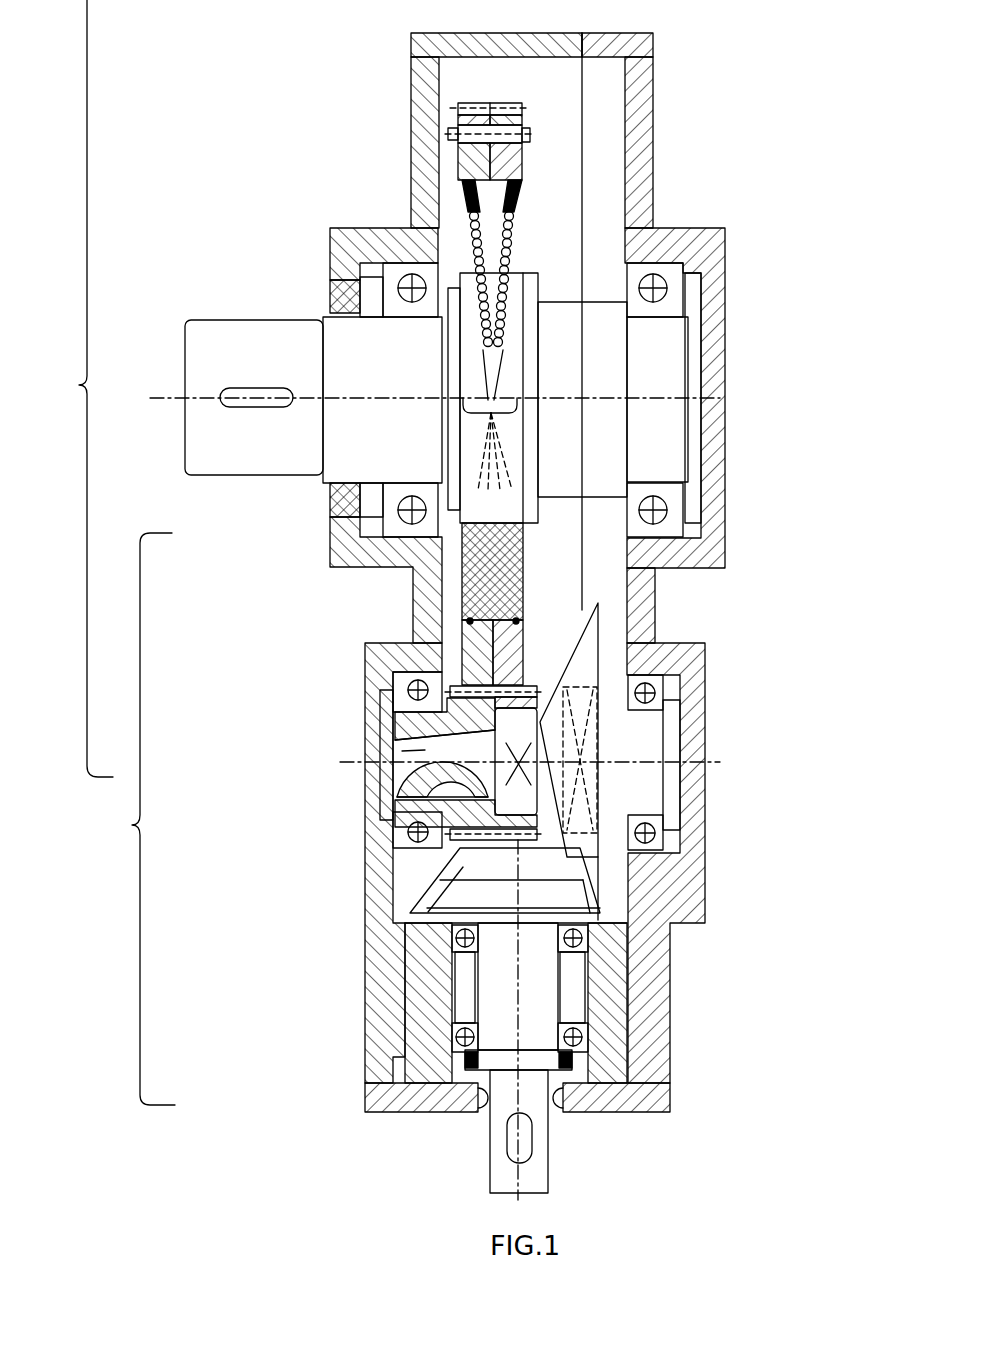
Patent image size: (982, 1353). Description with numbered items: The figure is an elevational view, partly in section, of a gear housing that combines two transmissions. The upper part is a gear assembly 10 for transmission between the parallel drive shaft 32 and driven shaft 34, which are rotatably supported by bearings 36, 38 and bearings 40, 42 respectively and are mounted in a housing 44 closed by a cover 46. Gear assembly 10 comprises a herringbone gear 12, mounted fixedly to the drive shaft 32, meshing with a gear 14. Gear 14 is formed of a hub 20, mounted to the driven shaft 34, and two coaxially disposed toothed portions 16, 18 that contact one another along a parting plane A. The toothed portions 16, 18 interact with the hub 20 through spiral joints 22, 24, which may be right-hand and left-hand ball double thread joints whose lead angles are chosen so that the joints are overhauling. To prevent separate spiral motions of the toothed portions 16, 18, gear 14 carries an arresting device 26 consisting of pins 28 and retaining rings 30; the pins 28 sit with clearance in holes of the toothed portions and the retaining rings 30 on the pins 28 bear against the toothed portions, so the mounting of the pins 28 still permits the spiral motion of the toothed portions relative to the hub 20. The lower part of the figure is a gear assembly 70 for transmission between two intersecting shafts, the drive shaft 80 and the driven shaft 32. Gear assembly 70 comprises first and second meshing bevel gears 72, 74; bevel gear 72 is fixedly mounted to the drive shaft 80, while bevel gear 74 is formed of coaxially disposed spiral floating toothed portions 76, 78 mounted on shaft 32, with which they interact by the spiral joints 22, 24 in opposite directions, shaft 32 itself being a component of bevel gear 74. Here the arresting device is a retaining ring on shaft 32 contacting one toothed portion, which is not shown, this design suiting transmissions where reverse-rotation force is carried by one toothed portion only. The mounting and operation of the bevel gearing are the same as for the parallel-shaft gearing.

The gear assembly 10 is at (75, 388).
The gear assembly 70 is at (131, 819).
The herringbone gear 12 is at (400, 721).
The gear 14 is at (513, 393).
The toothed portion 16 is at (458, 155).
The toothed portion 18 is at (520, 167).
The hub 20 is at (465, 605).
The spiral joint 22 is at (477, 275).
The spiral joint 24 is at (512, 327).
The arresting device 26 is at (535, 130).
The pin 28 is at (520, 134).
The retaining ring 30 is at (457, 127).
The drive shaft 32 is at (423, 750).
The driven shaft 34 is at (273, 455).
The bearing 36 is at (407, 826).
The bearing 38 is at (655, 705).
The bearing 40 is at (398, 305).
The bearing 42 is at (675, 529).
The housing 44 is at (400, 661).
The cover 46 is at (717, 363).
The parting plane A is at (507, 660).
The bevel gear 72 is at (473, 898).
The bevel gear 74 is at (669, 936).
The toothed portion 76 is at (600, 838).
The toothed portion 78 is at (597, 818).
The drive shaft 80 is at (535, 1180).